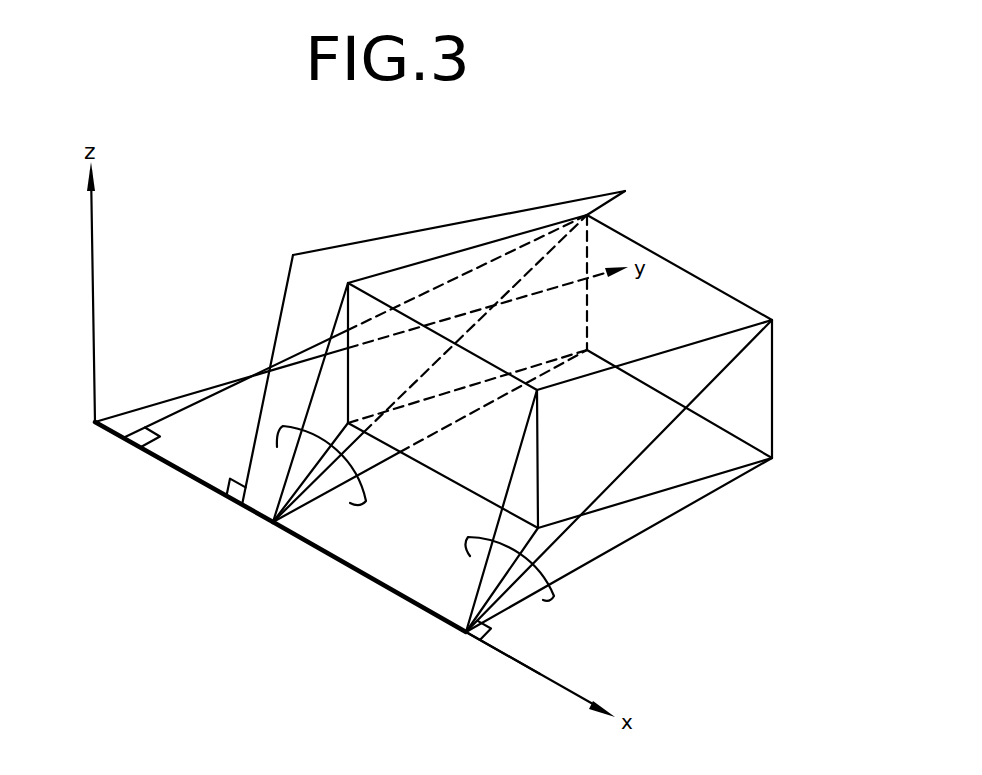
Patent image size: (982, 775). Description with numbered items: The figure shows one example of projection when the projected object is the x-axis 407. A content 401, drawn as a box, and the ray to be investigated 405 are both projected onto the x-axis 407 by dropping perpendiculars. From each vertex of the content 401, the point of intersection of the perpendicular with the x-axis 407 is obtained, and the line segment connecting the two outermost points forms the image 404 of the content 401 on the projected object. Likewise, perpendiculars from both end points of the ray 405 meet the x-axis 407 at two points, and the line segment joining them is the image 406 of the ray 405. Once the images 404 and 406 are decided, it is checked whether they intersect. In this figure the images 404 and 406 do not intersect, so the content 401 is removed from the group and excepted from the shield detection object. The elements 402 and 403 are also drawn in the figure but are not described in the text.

The content 401 is at (674, 262).
The second camera (viewpoint) 402 is at (555, 600).
The first camera (viewpoint) 403 is at (375, 498).
The image of the content 404 is at (331, 558).
The ray to be investigated 405 is at (317, 247).
The image of the ray 406 is at (171, 467).
The x-axis 407 is at (519, 662).